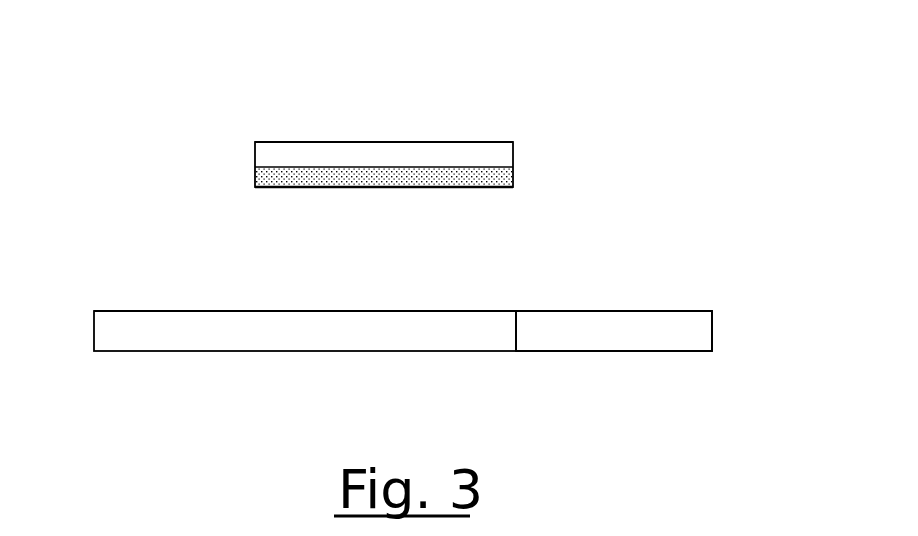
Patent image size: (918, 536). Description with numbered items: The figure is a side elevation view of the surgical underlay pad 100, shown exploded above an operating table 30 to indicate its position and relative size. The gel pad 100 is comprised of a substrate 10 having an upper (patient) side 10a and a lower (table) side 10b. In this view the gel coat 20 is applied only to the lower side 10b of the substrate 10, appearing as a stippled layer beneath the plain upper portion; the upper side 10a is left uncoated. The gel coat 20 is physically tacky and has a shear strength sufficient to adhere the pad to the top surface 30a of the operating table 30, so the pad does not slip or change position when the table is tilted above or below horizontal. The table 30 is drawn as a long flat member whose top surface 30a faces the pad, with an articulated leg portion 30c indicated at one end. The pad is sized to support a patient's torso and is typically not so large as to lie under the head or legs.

The surgical underlay pad 100 is at (142, 75).
The substrate 10 is at (505, 153).
The upper (patient) side of substrate 10a is at (332, 142).
The lower (table) side of substrate 10b is at (477, 187).
The gel coat 20 is at (325, 177).
The operating table 30 is at (140, 418).
The top surface of operating table 30a is at (167, 311).
The articulated leg portion of table 30c is at (690, 332).